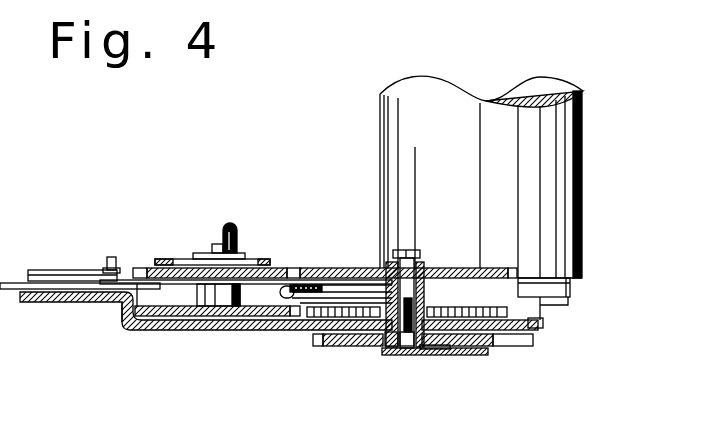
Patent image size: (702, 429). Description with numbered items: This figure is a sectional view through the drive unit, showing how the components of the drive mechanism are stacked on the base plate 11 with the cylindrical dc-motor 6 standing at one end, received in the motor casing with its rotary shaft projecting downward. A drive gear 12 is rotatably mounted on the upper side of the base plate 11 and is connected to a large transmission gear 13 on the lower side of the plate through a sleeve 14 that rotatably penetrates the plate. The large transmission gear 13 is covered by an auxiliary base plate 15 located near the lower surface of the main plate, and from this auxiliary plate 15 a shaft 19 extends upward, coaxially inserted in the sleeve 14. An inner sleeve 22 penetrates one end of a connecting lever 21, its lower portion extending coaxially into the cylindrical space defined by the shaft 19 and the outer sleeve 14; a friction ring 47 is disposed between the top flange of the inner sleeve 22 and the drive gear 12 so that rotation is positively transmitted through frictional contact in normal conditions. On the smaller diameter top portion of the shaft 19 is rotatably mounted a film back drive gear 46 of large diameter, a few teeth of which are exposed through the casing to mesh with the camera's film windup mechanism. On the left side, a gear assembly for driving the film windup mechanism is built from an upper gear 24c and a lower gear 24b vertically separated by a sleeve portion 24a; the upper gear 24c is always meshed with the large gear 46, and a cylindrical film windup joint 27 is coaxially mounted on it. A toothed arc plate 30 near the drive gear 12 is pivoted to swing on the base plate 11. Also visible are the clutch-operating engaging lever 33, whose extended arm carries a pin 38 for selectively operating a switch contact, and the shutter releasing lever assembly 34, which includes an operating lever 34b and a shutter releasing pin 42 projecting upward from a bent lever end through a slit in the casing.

The dc-motor 6 is at (568, 198).
The base plate 11 is at (146, 329).
The drive gear 12 is at (372, 348).
The large transmission gear 13 is at (322, 343).
The sleeve 14 is at (378, 356).
The auxiliary base plate 15 is at (480, 358).
The shaft 19 is at (413, 357).
The connecting lever 21 is at (252, 318).
The inner sleeve 22 is at (445, 352).
The sleeve portion 24a is at (182, 319).
The lower gear 24b is at (126, 308).
The upper gear 24c is at (150, 266).
The cylindrical film windup joint 27 is at (221, 242).
The toothed arc plate 30 is at (507, 313).
The engaging lever 33 is at (100, 272).
The lever assembly 34 is at (168, 260).
The operating lever 34b is at (288, 266).
The pin 38 is at (112, 256).
The pin 42 is at (238, 236).
The film back drive gear 46 is at (353, 266).
The friction ring 47 is at (424, 298).